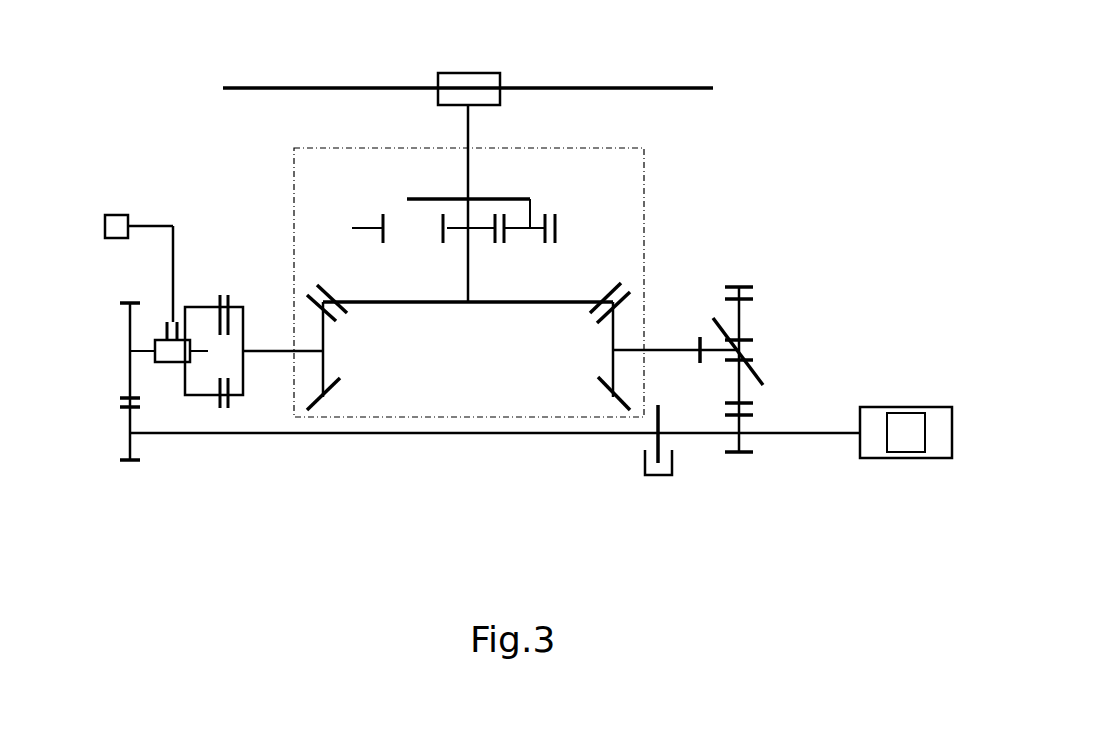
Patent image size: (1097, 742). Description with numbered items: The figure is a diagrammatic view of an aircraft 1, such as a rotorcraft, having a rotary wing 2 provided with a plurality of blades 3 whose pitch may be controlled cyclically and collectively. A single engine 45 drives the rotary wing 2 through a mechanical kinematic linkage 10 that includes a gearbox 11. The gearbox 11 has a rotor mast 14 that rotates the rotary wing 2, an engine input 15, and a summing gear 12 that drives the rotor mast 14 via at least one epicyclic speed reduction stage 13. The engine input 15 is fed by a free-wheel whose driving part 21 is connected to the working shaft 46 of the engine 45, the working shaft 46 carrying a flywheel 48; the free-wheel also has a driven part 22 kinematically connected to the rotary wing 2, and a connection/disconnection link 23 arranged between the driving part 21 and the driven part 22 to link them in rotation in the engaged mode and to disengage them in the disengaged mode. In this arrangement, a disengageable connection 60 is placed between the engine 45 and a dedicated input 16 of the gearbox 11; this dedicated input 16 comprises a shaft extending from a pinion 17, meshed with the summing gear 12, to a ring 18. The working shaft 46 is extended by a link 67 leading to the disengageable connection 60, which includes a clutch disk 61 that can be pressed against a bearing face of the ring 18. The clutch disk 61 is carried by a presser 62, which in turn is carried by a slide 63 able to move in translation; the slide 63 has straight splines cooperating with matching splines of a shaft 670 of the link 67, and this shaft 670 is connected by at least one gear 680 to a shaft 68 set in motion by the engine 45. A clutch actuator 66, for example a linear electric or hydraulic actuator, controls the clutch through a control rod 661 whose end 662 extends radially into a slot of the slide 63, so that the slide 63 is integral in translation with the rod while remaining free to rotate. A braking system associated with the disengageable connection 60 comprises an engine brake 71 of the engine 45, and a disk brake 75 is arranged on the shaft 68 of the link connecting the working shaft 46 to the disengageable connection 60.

The aircraft 1 is at (860, 139).
The rotary wing 2 is at (703, 64).
The blades 3 is at (660, 88).
The mechanical kinematic linkage 10 is at (738, 250).
The gearbox 11 is at (644, 205).
The summing gear 12 is at (525, 302).
The epicyclic speed reduction stage 13 is at (560, 184).
The rotor mast 14 is at (470, 128).
The engine input 15 is at (668, 350).
The dedicated input 16 is at (275, 350).
The pinion 17 is at (325, 343).
The ring 18 is at (242, 295).
The driving part 21 is at (734, 385).
The driven part 22 is at (722, 350).
The connection/disconnection link 23 is at (760, 372).
The engine 45 is at (903, 458).
The working shaft 46 is at (830, 433).
The flywheel 48 is at (745, 455).
The disengageable connection 60 is at (186, 463).
The clutch disk 61 is at (200, 306).
The presser 62 is at (193, 306).
The slide 63 is at (166, 363).
The clutch actuator 66 is at (118, 214).
The link 67 is at (472, 440).
The shaft 68 is at (410, 433).
The engine brake 71 is at (906, 432).
The disk brake 75 is at (643, 505).
The control rod 661 is at (152, 226).
The end 662 is at (170, 248).
The shaft 670 is at (147, 343).
The gear 680 is at (108, 445).